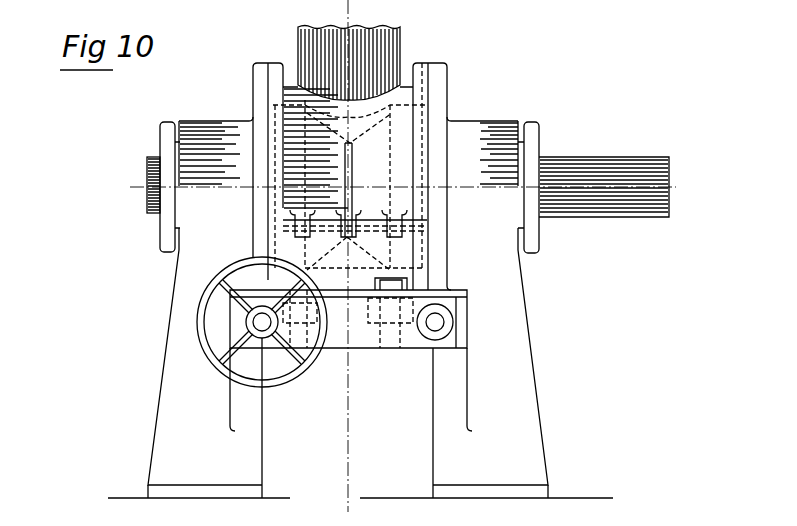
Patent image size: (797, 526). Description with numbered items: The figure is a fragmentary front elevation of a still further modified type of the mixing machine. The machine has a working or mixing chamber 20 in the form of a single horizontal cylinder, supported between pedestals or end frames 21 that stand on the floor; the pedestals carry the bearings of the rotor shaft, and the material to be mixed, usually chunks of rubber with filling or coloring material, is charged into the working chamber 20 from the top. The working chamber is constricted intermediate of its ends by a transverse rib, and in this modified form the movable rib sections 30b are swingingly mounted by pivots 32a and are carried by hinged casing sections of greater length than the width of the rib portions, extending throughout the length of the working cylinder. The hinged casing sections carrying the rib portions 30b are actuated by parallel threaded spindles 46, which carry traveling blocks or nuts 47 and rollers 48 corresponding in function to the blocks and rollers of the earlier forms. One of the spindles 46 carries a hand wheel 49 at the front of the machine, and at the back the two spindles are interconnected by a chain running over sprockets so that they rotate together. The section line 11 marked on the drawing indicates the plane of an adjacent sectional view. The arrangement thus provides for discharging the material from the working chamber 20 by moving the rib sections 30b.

The section line 11- 11 is at (345, 502).
The working or mixing chamber 20 is at (403, 137).
The pedestals or end frames 21 is at (180, 445).
The movable rib sections 30b is at (408, 248).
The pivots 32a is at (420, 222).
The parallel threaded spindles 46 is at (256, 326).
The traveling blocks or nuts 47 is at (358, 338).
The rollers 48 is at (387, 330).
The hand wheel 49 is at (277, 382).